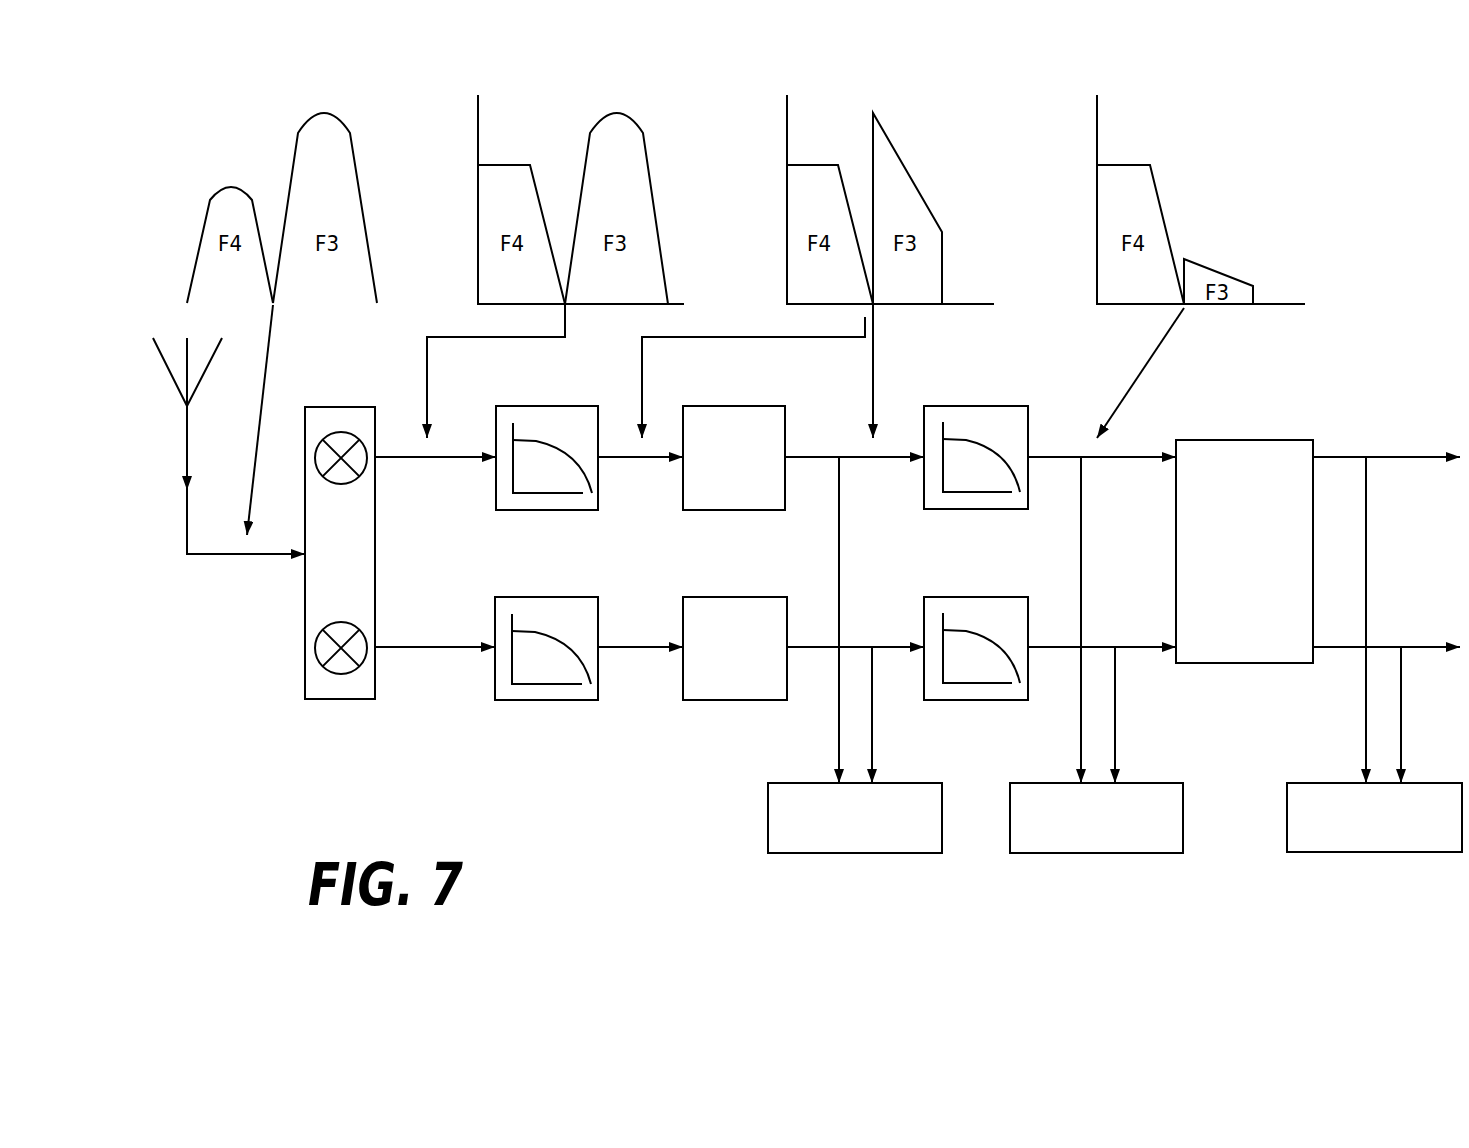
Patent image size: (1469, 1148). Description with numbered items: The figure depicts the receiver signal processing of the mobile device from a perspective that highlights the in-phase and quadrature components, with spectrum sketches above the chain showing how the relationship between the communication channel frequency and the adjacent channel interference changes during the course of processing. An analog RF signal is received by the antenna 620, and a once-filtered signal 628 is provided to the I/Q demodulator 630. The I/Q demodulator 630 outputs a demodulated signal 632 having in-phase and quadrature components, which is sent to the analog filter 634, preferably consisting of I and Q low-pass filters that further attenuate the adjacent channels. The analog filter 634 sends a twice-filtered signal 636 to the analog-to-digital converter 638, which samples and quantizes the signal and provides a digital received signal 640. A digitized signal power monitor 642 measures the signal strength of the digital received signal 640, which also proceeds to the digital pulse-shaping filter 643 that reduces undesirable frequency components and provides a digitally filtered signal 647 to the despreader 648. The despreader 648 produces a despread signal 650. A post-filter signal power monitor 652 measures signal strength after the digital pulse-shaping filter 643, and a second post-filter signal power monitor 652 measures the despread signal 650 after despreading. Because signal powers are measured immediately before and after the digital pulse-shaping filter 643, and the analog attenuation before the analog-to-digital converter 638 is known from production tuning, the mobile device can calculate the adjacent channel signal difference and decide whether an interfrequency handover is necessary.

The antenna 620 is at (175, 388).
The once-filtered signal 628 is at (213, 557).
The I/Q demodulator 630 is at (335, 700).
The demodulated signal 632 is at (422, 459).
The analog filter 634 is at (542, 510).
The twice-filtered signal 636 is at (620, 459).
The analog-to-digital converter 638 is at (738, 510).
The digital received signal 640 is at (858, 459).
The digitized signal power monitor 642 is at (857, 853).
The digital pulse-shaping filter 643 is at (980, 509).
The digitally filtered signal 647 is at (1102, 459).
The despreader 648 is at (1247, 663).
The despread signal 650 is at (1395, 459).
The post-filter signal power monitor 652 is at (1107, 853).